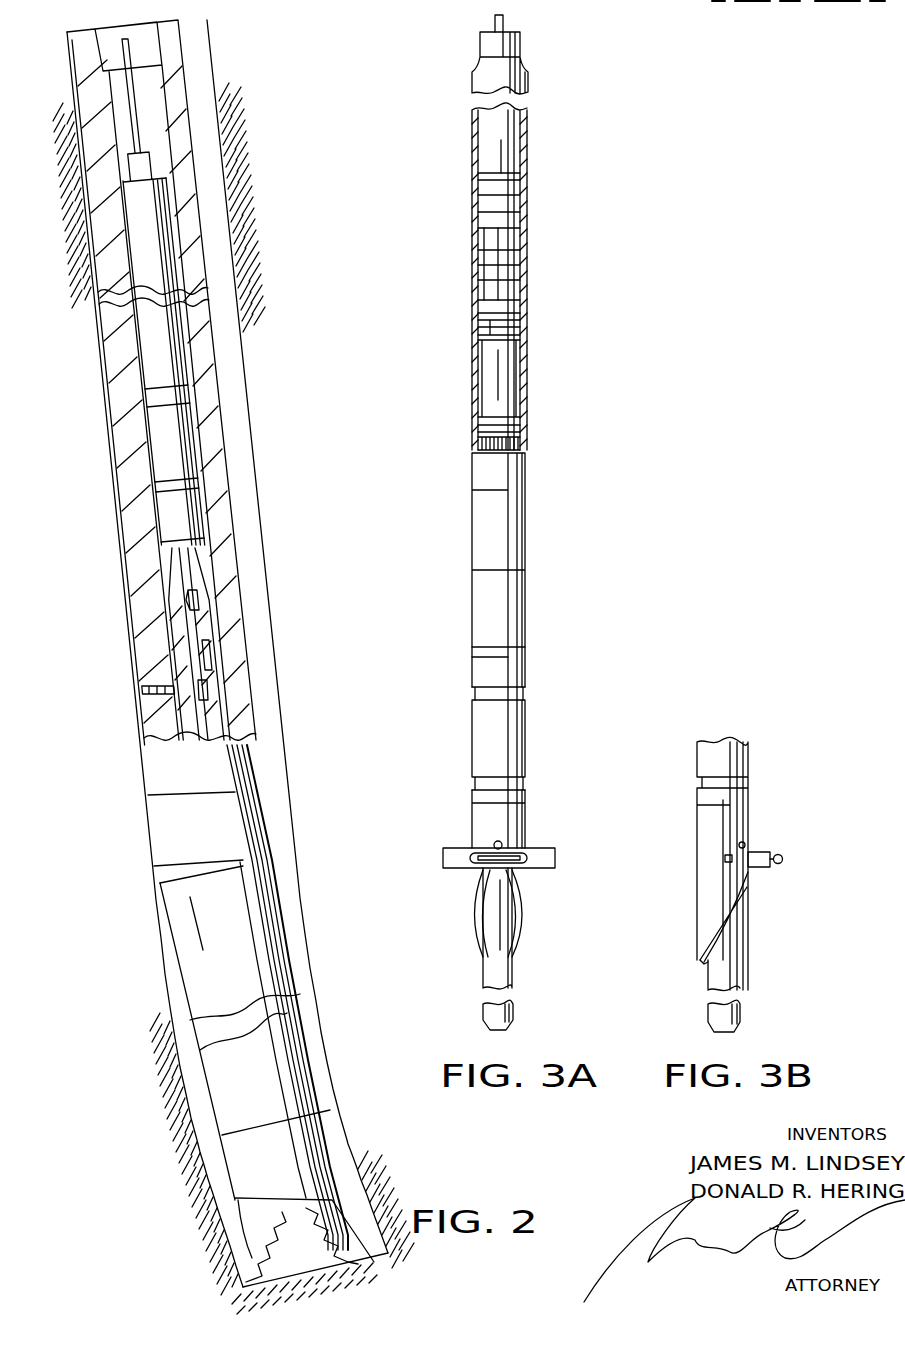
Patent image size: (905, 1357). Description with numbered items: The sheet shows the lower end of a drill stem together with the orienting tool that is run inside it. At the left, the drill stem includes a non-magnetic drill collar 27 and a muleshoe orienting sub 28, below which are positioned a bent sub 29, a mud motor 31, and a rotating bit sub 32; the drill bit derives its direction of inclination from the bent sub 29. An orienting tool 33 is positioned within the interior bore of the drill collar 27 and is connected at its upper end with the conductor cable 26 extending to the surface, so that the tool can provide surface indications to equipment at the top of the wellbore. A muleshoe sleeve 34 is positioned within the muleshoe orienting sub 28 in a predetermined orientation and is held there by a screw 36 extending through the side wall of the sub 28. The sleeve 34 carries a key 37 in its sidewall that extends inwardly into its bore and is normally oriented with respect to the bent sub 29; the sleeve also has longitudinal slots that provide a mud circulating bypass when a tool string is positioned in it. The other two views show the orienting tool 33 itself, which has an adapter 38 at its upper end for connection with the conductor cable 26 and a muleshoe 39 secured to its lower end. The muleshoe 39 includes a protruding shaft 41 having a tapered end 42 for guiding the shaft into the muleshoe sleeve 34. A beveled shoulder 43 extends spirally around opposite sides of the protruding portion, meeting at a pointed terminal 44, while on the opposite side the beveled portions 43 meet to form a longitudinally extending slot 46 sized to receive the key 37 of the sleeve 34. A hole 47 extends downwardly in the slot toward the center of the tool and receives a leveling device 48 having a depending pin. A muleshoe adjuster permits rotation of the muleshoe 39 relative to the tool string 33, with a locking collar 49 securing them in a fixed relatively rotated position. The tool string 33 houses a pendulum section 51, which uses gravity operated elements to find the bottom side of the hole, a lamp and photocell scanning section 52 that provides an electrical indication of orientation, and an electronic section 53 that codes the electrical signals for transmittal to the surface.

In FIG. 2, the conductor cable 26 is at (140, 122).
In FIG. 3A, the conductor cable 26 is at (504, 22).
In FIG. 2, the non-magnetic drill collar 27 is at (98, 350).
In FIG. 2, the muleshoe orienting sub 28 is at (142, 718).
In FIG. 2, the bent sub 29 is at (267, 833).
In FIG. 2, the mud motor 31 is at (290, 950).
In FIG. 2, the rotating bit sub 32 is at (355, 1150).
In FIG. 2, the orienting tool 33 is at (178, 345).
In FIG. 3A, the orienting tool 33 is at (527, 488).
In FIG. 2, the muleshoe sleeve 34 is at (213, 660).
In FIG. 2, the screw 36 is at (138, 690).
In FIG. 2, the key 37 is at (205, 602).
In FIG. 3A, the adapter 38 is at (525, 50).
In FIG. 3A, the muleshoe 39 is at (527, 737).
In FIG. 2, the protruding shaft 41 is at (214, 694).
In FIG. 3A, the protruding shaft 41 is at (513, 973).
In FIG. 3A, the tapered end 42 is at (517, 1022).
In FIG. 3A, the beveled shoulder 43 is at (523, 922).
In FIG. 3B, the beveled shoulder 43 is at (706, 950).
In FIG. 3B, the pointed terminal 44 is at (700, 963).
In FIG. 3A, the longitudinally extending slot 46 is at (504, 846).
In FIG. 3B, the longitudinally extending slot 46 is at (746, 846).
In FIG. 3B, the hole 47 is at (732, 862).
In FIG. 3A, the leveling device 48 is at (556, 858).
In FIG. 3B, the leveling device 48 is at (782, 860).
In FIG. 3A, the locking collar 49 is at (527, 657).
In FIG. 3A, the pendulum section 51 is at (512, 373).
In FIG. 3A, the lamp and photocell scanning section 52 is at (520, 295).
In FIG. 3A, the electronic section 53 is at (522, 160).